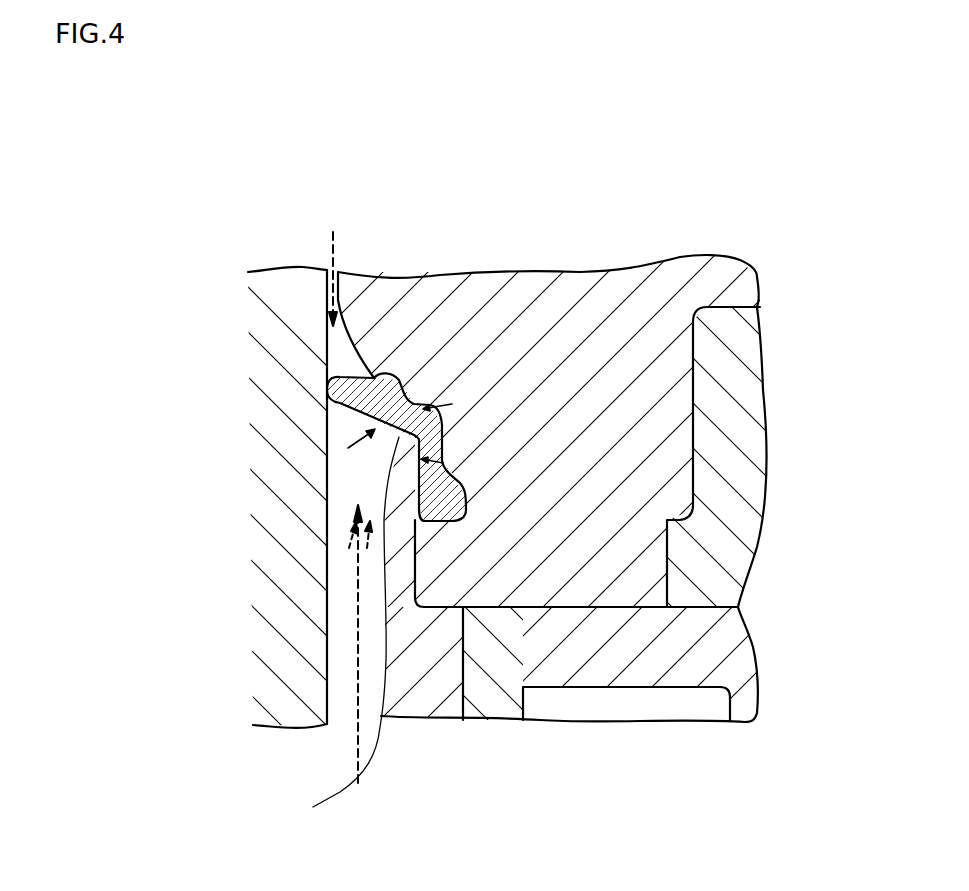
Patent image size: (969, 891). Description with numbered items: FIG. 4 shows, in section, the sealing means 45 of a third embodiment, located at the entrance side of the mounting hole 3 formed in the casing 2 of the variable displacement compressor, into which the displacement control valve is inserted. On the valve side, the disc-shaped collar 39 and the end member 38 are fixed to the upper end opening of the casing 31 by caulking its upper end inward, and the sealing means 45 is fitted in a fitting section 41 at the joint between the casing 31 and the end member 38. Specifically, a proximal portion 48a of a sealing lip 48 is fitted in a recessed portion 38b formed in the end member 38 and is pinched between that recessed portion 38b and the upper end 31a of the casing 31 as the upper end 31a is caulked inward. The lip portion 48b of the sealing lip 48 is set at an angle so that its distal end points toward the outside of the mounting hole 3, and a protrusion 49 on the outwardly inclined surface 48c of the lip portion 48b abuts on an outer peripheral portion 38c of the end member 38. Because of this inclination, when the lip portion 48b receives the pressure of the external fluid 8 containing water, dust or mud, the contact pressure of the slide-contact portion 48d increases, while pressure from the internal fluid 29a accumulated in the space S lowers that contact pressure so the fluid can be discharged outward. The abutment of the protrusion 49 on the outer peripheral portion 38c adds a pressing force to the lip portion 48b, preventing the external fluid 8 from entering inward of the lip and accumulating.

The casing 2 is at (262, 272).
The mounting hole 3 is at (342, 538).
The external fluid 8 is at (338, 297).
The internal fluid 29a is at (347, 697).
The casing 31 is at (493, 720).
The upper end 31a is at (492, 639).
The end member 38 is at (597, 273).
The recessed portion 38b is at (450, 475).
The outer peripheral portion 38c is at (412, 385).
The collar 39 is at (755, 427).
The fitting section 41 is at (445, 458).
The sealing means 45 is at (335, 508).
The sealing lip 48 is at (438, 402).
The proximal portion 48a is at (505, 608).
The lip portion 48b is at (336, 431).
The surface 48c is at (345, 378).
The slide-contact portion 48d is at (330, 377).
The protrusion 49 is at (388, 372).
The space S is at (343, 633).